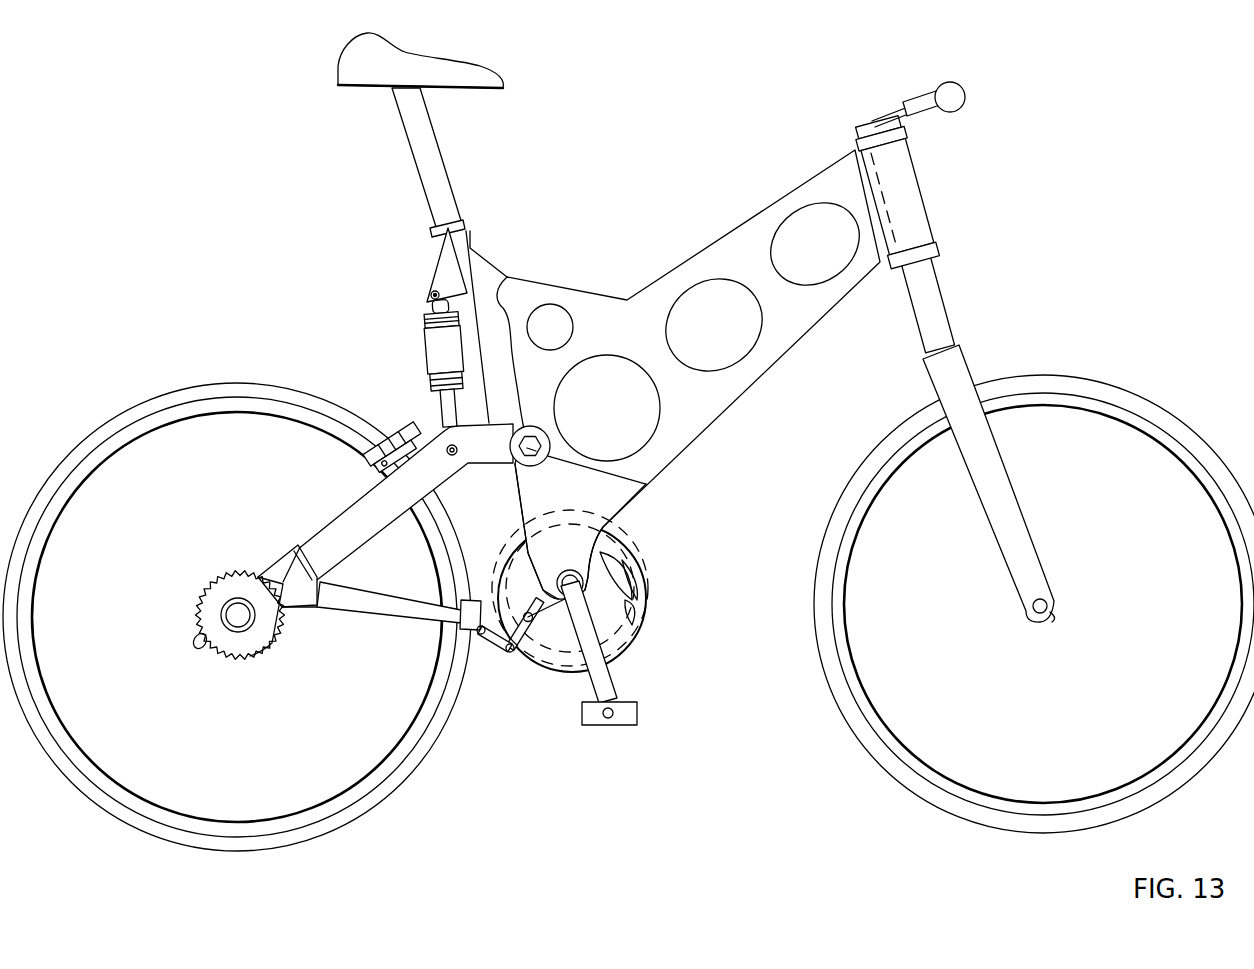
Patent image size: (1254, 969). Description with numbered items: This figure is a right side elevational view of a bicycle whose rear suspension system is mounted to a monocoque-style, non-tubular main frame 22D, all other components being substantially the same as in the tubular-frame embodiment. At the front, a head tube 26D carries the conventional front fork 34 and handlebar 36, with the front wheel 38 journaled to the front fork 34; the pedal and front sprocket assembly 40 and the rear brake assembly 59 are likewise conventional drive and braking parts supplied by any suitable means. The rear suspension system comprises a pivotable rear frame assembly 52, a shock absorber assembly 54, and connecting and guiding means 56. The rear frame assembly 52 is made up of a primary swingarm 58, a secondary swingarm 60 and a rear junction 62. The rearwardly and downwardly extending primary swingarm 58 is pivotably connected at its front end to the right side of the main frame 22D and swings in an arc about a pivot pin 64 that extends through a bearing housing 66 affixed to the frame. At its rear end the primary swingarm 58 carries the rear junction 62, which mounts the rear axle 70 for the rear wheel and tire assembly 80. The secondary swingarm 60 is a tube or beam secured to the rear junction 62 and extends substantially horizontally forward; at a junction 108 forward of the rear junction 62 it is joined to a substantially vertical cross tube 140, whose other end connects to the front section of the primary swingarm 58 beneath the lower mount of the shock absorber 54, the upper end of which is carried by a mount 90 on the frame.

The main frame 22D is at (470, 238).
The head tube 26D is at (903, 215).
The front fork 34 is at (943, 307).
The handlebar 36 is at (933, 93).
The front wheel 38 is at (1153, 403).
The pedal and front sprocket assembly 40 is at (617, 692).
The pivotable rear frame assembly 52 is at (297, 547).
The shock absorber assembly 54 is at (420, 333).
The connecting and guiding means 56 is at (513, 673).
The primary swingarm 58 is at (373, 502).
The rear brake assembly 59 is at (400, 425).
The secondary swingarm 60 is at (330, 617).
The rear junction 62 is at (270, 643).
The pivot pin 64 is at (647, 483).
The bearing housing 66 is at (505, 272).
The rear axle 70 is at (227, 613).
The rear wheel and tire assembly 80 is at (393, 787).
The shock mounting bracket 90 is at (438, 284).
The junction 108 is at (462, 628).
The cross tube 140 is at (463, 563).